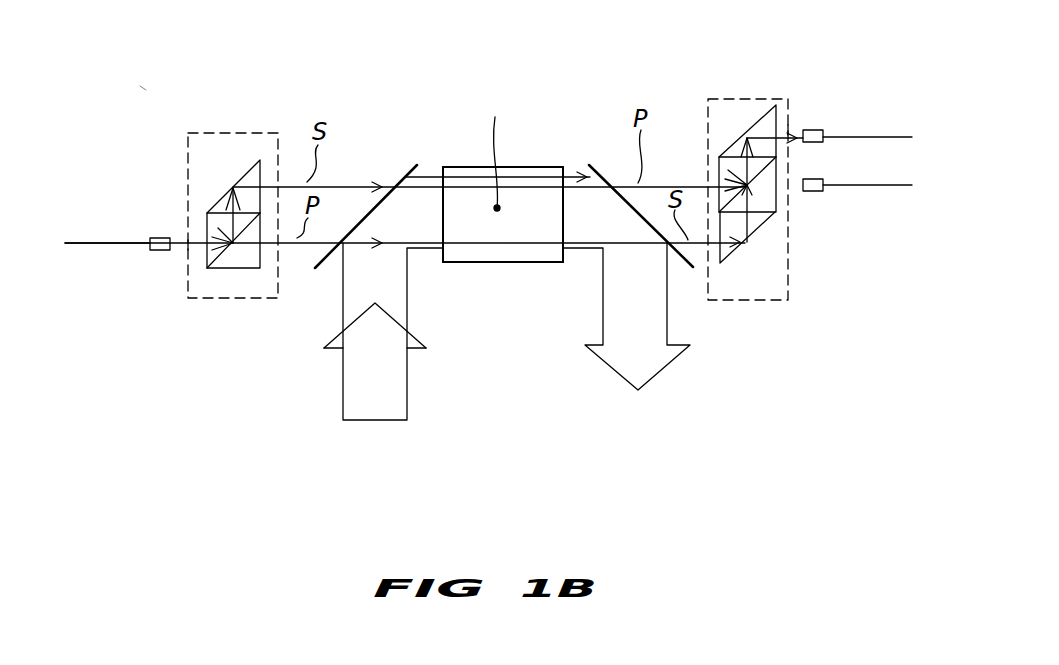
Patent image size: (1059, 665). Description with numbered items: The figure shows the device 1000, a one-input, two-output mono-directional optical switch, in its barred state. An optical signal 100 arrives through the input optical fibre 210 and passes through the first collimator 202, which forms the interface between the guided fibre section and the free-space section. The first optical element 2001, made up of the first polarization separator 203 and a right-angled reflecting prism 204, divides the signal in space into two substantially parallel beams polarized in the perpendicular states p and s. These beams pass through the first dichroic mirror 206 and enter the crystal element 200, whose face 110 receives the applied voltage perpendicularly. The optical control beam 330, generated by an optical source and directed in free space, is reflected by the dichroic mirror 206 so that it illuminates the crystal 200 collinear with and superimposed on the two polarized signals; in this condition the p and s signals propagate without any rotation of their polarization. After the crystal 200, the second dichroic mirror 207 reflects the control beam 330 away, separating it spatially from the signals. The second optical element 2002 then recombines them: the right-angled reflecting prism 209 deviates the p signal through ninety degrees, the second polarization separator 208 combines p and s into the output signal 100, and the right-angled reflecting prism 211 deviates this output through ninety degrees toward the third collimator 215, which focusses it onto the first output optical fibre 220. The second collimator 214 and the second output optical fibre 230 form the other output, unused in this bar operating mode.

The device 1000 is at (143, 88).
The optical signal 100 is at (180, 247).
The face of the crystal 110 is at (548, 168).
The crystal element 200 is at (500, 276).
The first collimator 202 is at (160, 255).
The first polarization separator 203 is at (216, 222).
The right-angled reflecting prism 204 is at (250, 175).
The first dichroic mirror 206 is at (403, 177).
The second dichroic mirror 207 is at (600, 172).
The second polarization separator 208 is at (730, 177).
The right-angled reflecting prism 209 is at (755, 220).
The input optical fibre 210 is at (103, 242).
The right-angled reflecting prism 211 is at (762, 125).
The second collimator 214 is at (813, 192).
The third collimator 215 is at (810, 128).
The first output optical fibre 220 is at (848, 135).
The second output optical fibre 230 is at (885, 187).
The optical control beam 330 is at (397, 393).
The first optical element 2001 is at (232, 311).
The second optical element 2002 is at (750, 280).